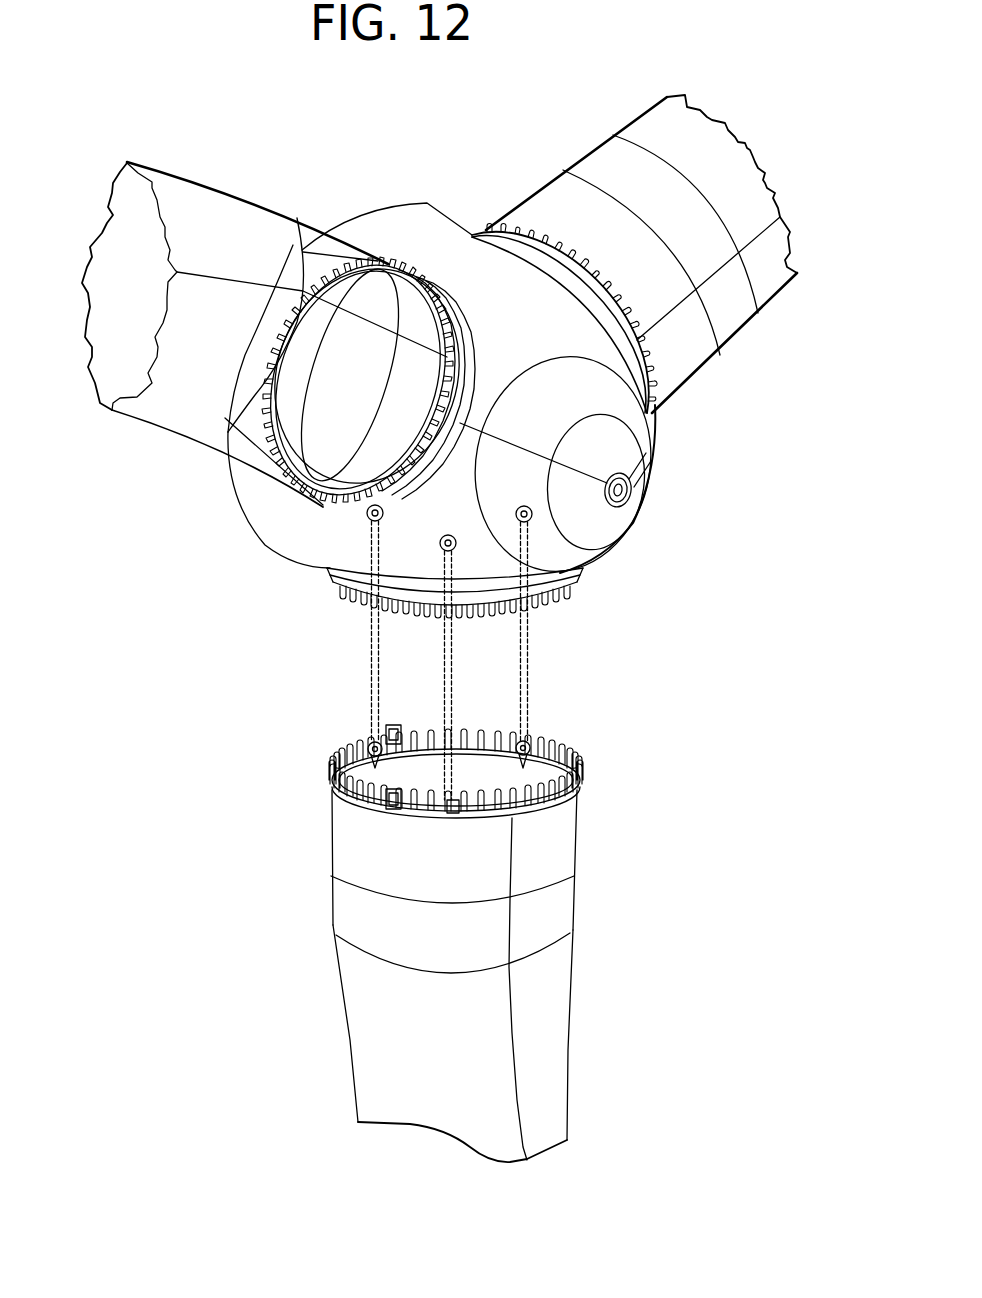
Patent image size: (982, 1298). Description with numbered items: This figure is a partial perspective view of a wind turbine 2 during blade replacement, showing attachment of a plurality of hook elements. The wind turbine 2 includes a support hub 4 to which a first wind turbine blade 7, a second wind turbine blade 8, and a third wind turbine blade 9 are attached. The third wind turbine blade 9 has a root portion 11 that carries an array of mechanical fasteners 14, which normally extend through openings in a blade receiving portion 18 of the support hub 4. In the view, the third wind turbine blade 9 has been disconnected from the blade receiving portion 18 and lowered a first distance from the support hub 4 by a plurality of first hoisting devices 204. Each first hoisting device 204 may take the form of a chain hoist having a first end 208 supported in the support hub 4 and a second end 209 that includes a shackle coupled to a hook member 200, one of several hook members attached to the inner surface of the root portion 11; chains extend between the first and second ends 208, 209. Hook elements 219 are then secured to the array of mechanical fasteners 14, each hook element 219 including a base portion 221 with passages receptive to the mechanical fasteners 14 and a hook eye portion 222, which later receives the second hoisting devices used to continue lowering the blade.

The wind turbine 2 is at (705, 468).
The support hub 4 is at (397, 220).
The first wind turbine blade 7 is at (222, 222).
The second wind turbine blade 8 is at (605, 160).
The third wind turbine blade 9 is at (333, 1053).
The root portion 11 is at (318, 878).
The array of mechanical fasteners 14 is at (502, 715).
The blade receiving portion 18 is at (330, 578).
The hook member 200 is at (522, 768).
The first hoisting device 204 is at (550, 663).
The first end 208 is at (524, 505).
The second end 209 is at (548, 742).
The hook element 219 is at (404, 774).
The base portion 221 is at (405, 752).
The hook eye portion 222 is at (395, 724).